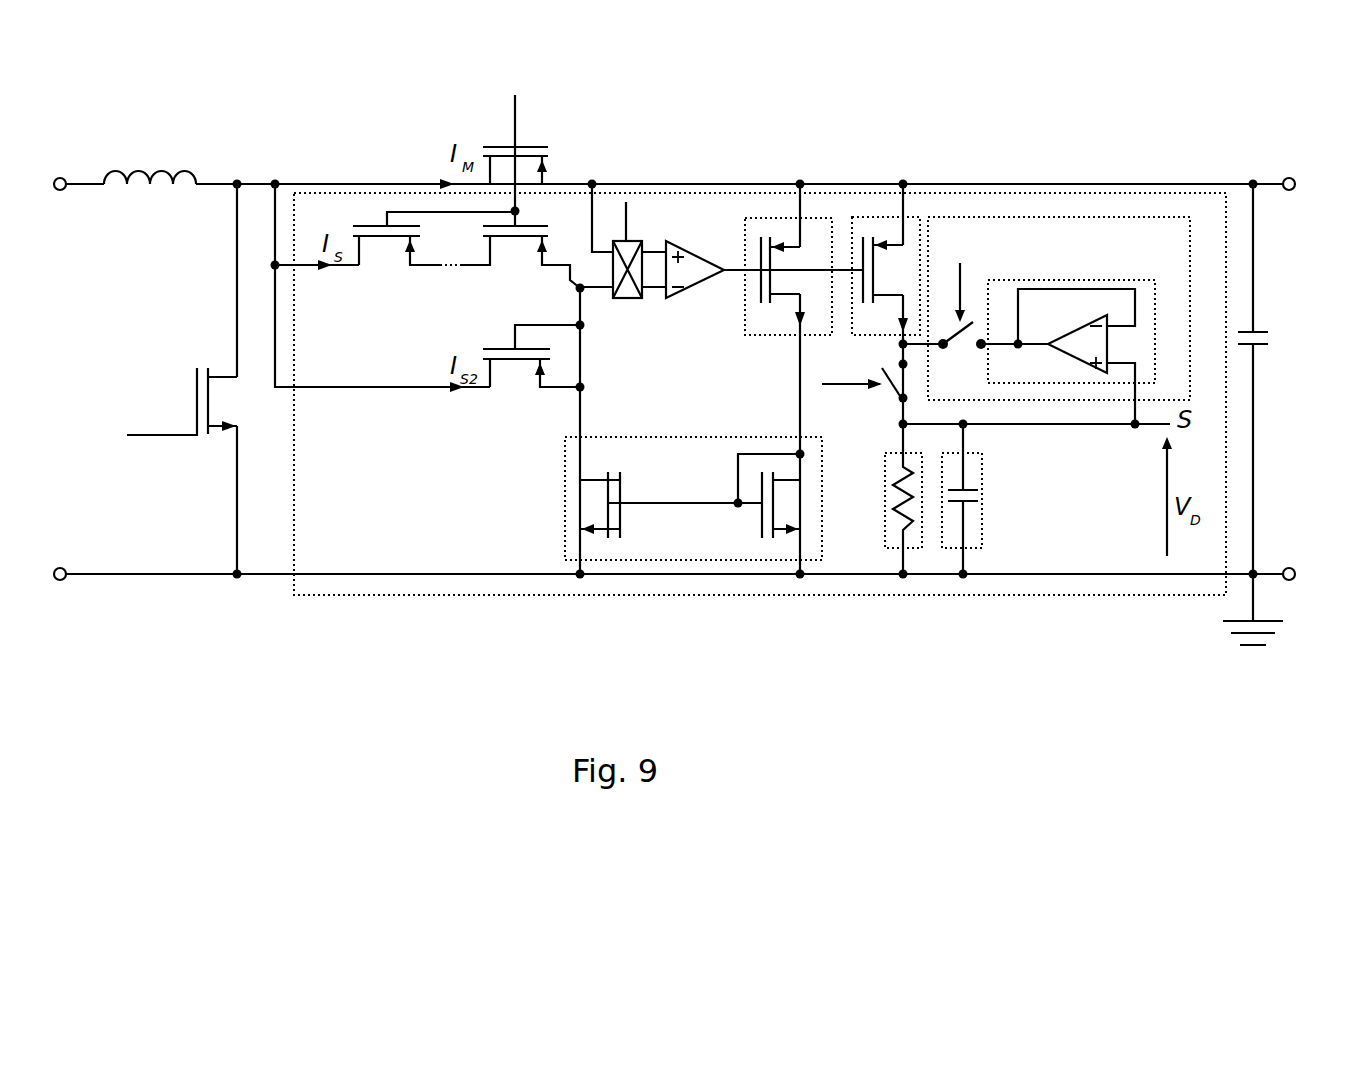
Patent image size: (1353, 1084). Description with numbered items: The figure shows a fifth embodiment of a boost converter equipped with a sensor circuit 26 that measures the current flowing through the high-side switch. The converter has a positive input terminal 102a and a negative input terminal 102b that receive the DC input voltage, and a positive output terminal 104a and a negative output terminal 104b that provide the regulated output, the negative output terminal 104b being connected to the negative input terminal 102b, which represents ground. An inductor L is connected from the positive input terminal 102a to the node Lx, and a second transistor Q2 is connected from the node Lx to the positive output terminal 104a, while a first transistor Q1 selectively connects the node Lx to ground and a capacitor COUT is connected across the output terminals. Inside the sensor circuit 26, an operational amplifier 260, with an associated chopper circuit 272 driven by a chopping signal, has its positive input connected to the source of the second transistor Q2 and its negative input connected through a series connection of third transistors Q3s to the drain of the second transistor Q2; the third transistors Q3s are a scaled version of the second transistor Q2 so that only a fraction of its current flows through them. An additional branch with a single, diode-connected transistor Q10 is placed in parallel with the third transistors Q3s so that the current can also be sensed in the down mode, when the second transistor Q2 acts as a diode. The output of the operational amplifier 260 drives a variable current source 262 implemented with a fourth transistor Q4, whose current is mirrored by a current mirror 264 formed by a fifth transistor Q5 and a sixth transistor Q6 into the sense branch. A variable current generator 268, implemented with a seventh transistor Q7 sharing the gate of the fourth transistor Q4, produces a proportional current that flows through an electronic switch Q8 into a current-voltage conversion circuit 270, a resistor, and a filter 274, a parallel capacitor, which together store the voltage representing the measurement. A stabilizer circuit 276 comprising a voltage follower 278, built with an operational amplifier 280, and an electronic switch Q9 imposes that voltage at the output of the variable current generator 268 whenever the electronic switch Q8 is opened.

The sensor circuit 26 is at (510, 598).
The positive input terminal 102a is at (60, 178).
The negative input terminal 102b is at (60, 580).
The positive output terminal 104a is at (1289, 178).
The negative output terminal 104b is at (1289, 580).
The operational amplifier 260 is at (695, 288).
The variable current source 262 is at (762, 294).
The current mirror 264 is at (693, 537).
The variable current generator 268 is at (903, 271).
The current-voltage conversion circuit 270 is at (896, 520).
The chopper circuit 272 is at (630, 300).
The filter 274 is at (1010, 475).
The stabilizer circuit 276 is at (1096, 213).
The voltage follower 278 is at (1049, 278).
The operational amplifier 280 is at (1108, 313).
The inductor L is at (151, 152).
The node Lx is at (234, 176).
The first transistor Q1 is at (203, 362).
The second transistor Q2 is at (492, 143).
The third transistors Q3s is at (445, 284).
The fourth transistor Q4 is at (789, 233).
The fifth transistor Q5 is at (757, 514).
The sixth transistor Q6 is at (668, 470).
The seventh transistor Q7 is at (881, 238).
The electronic switch Q8 is at (891, 394).
The electronic switch Q9 is at (958, 355).
The single transistor Q10 is at (518, 400).
The capacitor COUT is at (1266, 326).